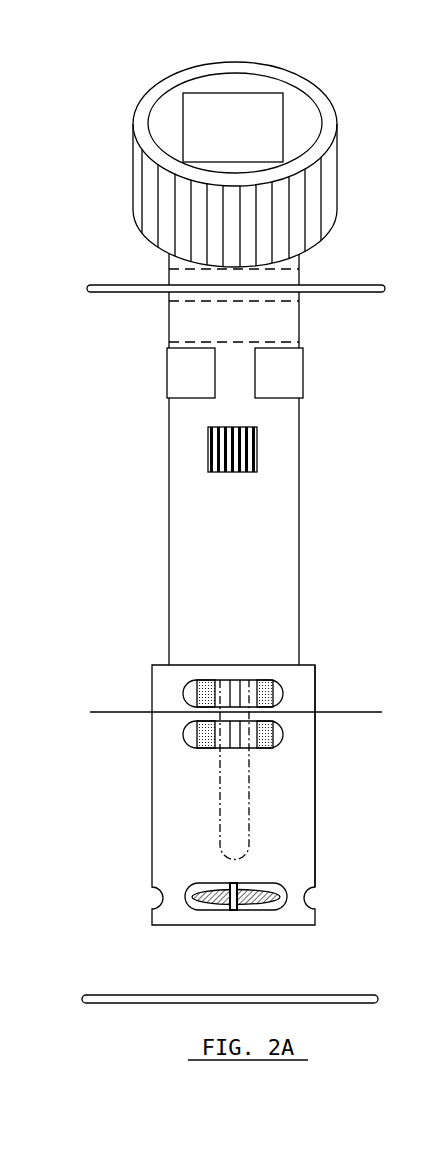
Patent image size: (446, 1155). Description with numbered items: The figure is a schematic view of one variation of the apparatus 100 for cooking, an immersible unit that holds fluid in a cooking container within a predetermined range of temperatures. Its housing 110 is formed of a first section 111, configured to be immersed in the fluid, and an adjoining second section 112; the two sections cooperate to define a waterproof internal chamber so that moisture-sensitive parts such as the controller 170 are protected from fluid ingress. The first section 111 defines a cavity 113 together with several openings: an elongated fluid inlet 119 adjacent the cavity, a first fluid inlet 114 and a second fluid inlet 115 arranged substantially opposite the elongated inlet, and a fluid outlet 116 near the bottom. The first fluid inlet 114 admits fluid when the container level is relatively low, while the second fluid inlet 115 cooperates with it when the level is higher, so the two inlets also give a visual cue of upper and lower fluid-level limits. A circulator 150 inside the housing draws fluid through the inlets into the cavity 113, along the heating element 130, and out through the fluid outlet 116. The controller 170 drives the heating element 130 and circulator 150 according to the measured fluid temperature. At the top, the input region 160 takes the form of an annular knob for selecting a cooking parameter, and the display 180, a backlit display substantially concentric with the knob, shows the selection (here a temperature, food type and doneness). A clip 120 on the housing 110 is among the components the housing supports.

The apparatus for cooking 100 is at (140, 68).
The housing 110 is at (280, 485).
The first section 111 is at (302, 804).
The second section 112 is at (286, 538).
The cavity 113 is at (302, 857).
The first fluid inlet 114 is at (283, 735).
The second fluid inlet 115 is at (283, 692).
The fluid outlet 116 is at (203, 908).
The elongated fluid inlet 119 is at (230, 780).
The clip 120 is at (192, 380).
The heating element 130 is at (183, 735).
The circulator 150 is at (192, 893).
The input region 160 is at (284, 226).
The controller 170 is at (208, 452).
The display 180 is at (275, 123).